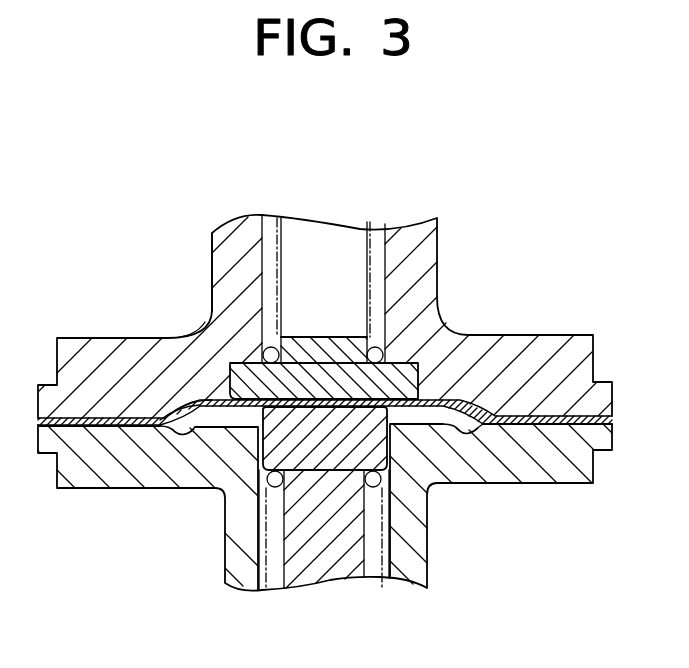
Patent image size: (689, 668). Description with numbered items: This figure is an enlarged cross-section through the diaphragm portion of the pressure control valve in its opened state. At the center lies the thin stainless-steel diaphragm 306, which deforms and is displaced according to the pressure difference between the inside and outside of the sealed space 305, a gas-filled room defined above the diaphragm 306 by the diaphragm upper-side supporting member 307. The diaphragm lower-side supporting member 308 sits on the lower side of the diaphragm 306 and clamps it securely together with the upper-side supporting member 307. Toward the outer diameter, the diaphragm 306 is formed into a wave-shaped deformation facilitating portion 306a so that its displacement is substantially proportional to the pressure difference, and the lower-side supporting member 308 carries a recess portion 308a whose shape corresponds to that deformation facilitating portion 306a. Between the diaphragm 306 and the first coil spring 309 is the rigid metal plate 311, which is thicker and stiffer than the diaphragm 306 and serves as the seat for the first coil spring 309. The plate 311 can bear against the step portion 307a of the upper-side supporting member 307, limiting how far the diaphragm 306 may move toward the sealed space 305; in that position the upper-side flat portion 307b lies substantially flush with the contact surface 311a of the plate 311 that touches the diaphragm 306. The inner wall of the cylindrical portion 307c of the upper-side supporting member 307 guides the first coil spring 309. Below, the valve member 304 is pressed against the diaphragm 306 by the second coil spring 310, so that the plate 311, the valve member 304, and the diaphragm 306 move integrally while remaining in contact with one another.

The valve member 304 is at (325, 523).
The sealed space 305 is at (300, 250).
The diaphragm 306 is at (450, 378).
The deformation facilitating portion 306a is at (177, 430).
The diaphragm upper-side supporting member 307 is at (98, 380).
The step portion 307a is at (215, 382).
The upper-side flat portion 307b is at (165, 337).
The cylindrical portion 307c is at (212, 258).
The diaphragm lower-side supporting member 308 is at (103, 460).
The recess portion 308a is at (181, 440).
The first coil spring 309 is at (376, 250).
The second coil spring 310 is at (276, 486).
The plate 311 is at (325, 347).
The contact surface 311a is at (428, 345).